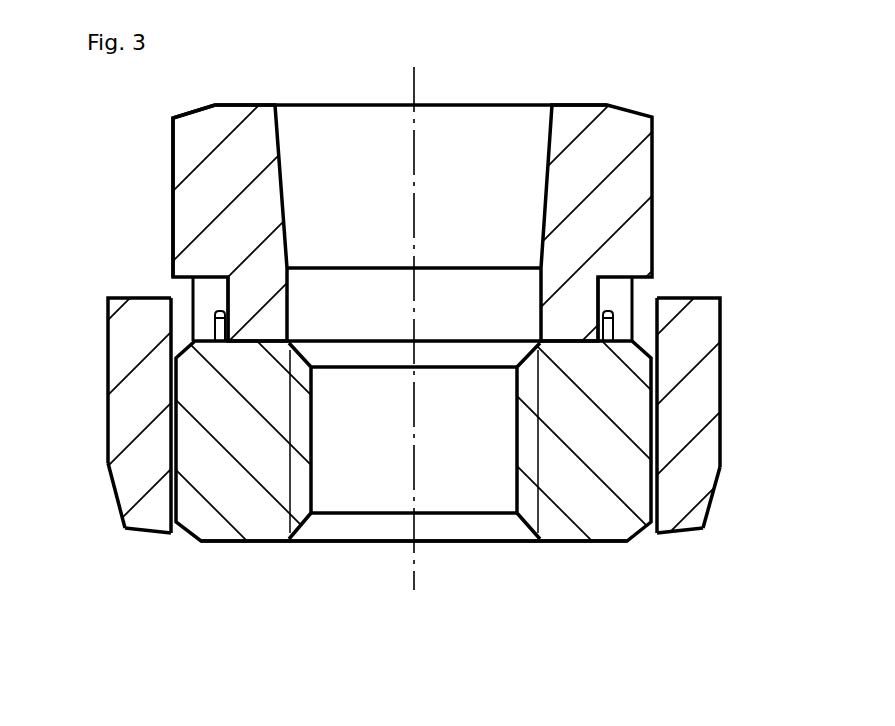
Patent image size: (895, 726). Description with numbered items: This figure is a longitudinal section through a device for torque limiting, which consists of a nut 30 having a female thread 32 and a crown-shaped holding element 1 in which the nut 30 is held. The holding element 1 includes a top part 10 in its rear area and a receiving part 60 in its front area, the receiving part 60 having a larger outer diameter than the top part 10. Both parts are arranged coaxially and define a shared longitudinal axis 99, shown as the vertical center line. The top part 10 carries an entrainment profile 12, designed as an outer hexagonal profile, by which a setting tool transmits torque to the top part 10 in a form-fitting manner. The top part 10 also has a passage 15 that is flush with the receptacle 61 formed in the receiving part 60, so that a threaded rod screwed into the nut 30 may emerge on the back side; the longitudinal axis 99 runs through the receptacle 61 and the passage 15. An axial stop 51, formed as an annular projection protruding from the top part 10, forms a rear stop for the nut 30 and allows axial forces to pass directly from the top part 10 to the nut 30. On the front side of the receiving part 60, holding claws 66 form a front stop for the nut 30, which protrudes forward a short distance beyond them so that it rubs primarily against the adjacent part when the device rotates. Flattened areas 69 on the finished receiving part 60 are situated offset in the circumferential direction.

The holding element 1 is at (447, 363).
The top part 10 is at (628, 168).
The entrainment profile 12 is at (175, 155).
The passage 15 is at (477, 184).
The nut 30 is at (275, 470).
The female thread 32 is at (302, 442).
The axial stop 51 is at (255, 323).
The receiving part 60 is at (133, 432).
The receptacle 61 is at (525, 594).
The holding claws 66 is at (177, 532).
The flattened areas 69 is at (84, 513).
The longitudinal axis 99 is at (415, 82).